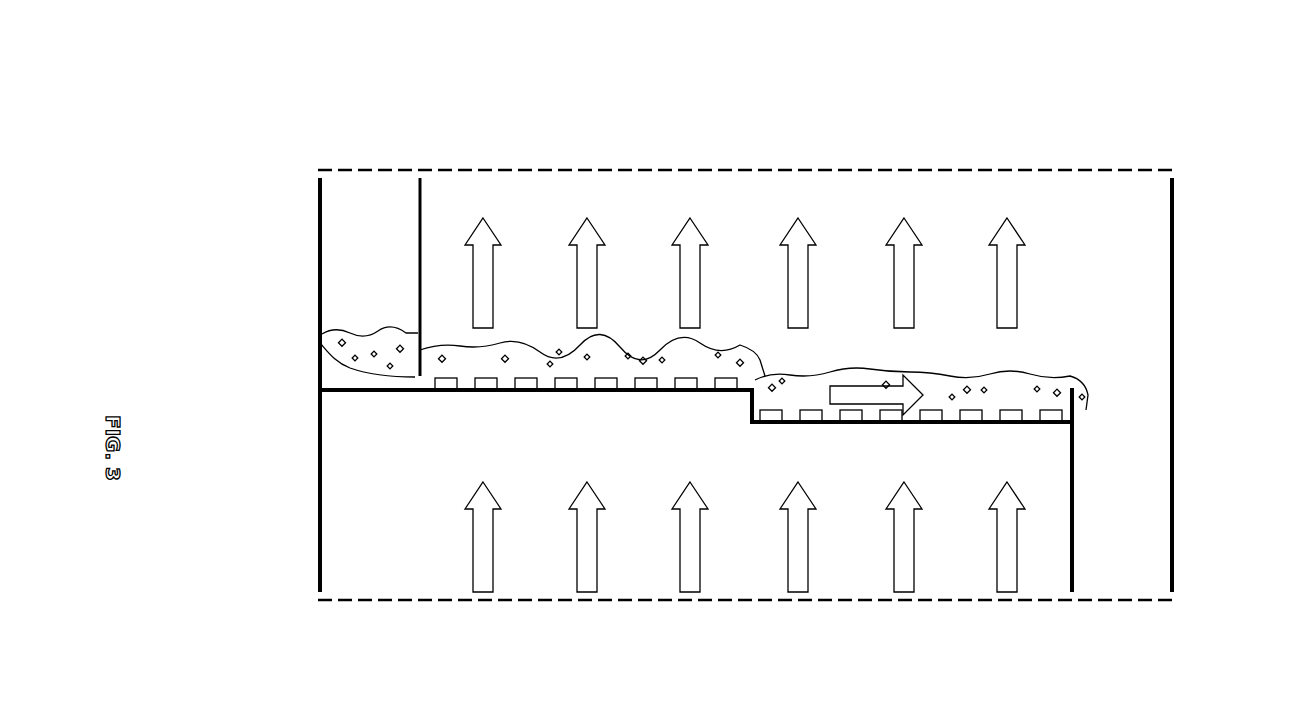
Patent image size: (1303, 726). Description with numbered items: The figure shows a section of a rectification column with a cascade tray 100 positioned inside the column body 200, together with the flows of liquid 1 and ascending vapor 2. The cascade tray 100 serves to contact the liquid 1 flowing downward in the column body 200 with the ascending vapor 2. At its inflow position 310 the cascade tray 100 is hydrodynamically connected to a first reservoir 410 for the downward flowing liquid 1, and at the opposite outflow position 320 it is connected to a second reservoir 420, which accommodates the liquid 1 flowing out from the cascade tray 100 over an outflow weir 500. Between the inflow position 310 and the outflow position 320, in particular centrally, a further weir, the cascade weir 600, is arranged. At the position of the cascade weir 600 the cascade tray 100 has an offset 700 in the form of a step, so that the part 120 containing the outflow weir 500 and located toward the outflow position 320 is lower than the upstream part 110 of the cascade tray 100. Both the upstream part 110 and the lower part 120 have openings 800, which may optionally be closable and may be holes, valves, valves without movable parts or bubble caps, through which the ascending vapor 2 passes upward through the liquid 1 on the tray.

The liquid 1 is at (384, 350).
The ascending vapor 2 is at (585, 258).
The cascade tray 100 is at (463, 408).
The upstream part of the cascade tray 110 is at (585, 392).
The part containing the outflow weir 120 is at (790, 424).
The column body 200 is at (316, 478).
The inflow position 310 is at (320, 343).
The outflow position 320 is at (1068, 372).
The first reservoir 410 is at (347, 279).
The second reservoir 420 is at (1127, 525).
The outflow weir 500 is at (1072, 410).
The cascade weir 600 is at (753, 372).
The offset 700 is at (752, 402).
The openings 800 is at (610, 380).